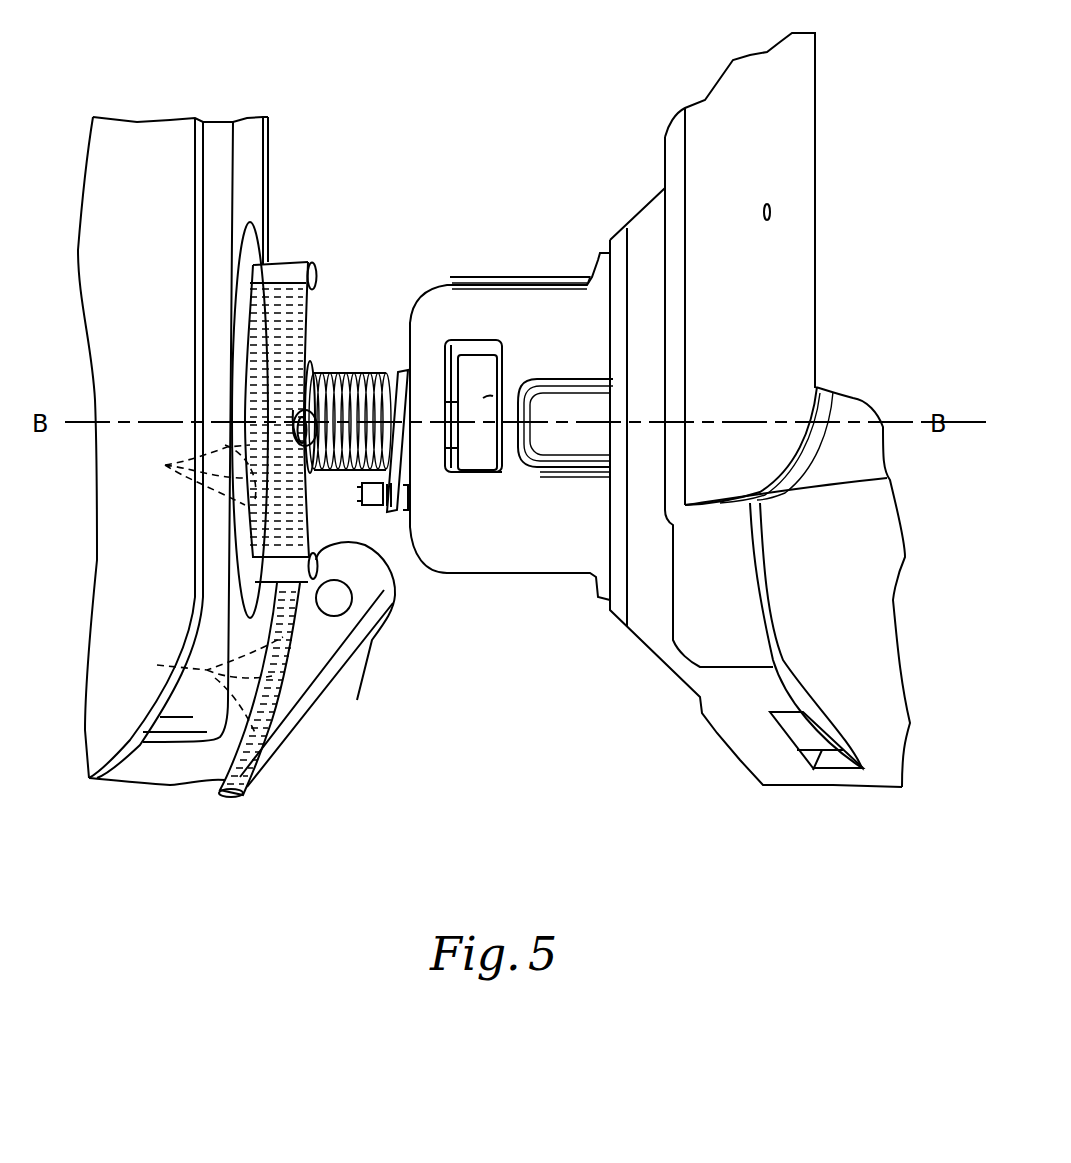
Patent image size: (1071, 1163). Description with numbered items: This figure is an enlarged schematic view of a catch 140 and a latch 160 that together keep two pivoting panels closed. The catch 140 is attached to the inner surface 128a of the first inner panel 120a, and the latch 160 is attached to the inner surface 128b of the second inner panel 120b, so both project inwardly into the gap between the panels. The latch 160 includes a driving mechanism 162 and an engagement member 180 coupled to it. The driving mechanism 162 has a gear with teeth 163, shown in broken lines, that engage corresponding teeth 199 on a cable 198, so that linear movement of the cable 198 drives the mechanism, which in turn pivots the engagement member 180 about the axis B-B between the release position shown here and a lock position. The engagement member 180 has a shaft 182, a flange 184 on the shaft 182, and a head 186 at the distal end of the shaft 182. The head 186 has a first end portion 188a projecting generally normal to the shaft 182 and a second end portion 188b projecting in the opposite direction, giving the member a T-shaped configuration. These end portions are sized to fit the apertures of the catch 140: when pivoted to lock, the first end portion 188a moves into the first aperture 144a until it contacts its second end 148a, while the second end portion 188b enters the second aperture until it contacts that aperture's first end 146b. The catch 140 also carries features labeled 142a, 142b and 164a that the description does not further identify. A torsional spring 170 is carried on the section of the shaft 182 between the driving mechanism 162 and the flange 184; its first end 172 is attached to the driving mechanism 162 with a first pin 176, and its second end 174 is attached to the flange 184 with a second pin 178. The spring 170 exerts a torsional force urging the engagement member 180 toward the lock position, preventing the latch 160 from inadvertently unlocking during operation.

The second inner panel 120b is at (148, 128).
The inner surface 128b is at (252, 150).
The driving mechanism 162 is at (307, 253).
The latch 160 is at (357, 250).
The bracket side wall 142a is at (412, 318).
The bracket top flange 142b is at (472, 282).
The catch 140 is at (523, 377).
The flange 184 is at (300, 492).
The first end portion 188a is at (483, 367).
The first end 146b is at (503, 377).
The head 186 is at (483, 398).
The lower boss edge 164a is at (497, 468).
The second end 148a is at (463, 473).
The second end portion 188b is at (478, 462).
The first aperture 144a is at (497, 470).
The first pin 176 is at (300, 412).
The first end 172 is at (300, 440).
The teeth 163 is at (186, 475).
The torsional spring 170 is at (300, 492).
The shaft 182 is at (337, 373).
The engagement member 180 is at (398, 403).
The second end 174 is at (362, 507).
The second pin 178 is at (356, 670).
The cable 198 is at (277, 723).
The teeth 199 is at (200, 686).
The inner surface 128a is at (663, 136).
The first inner panel 120a is at (787, 82).